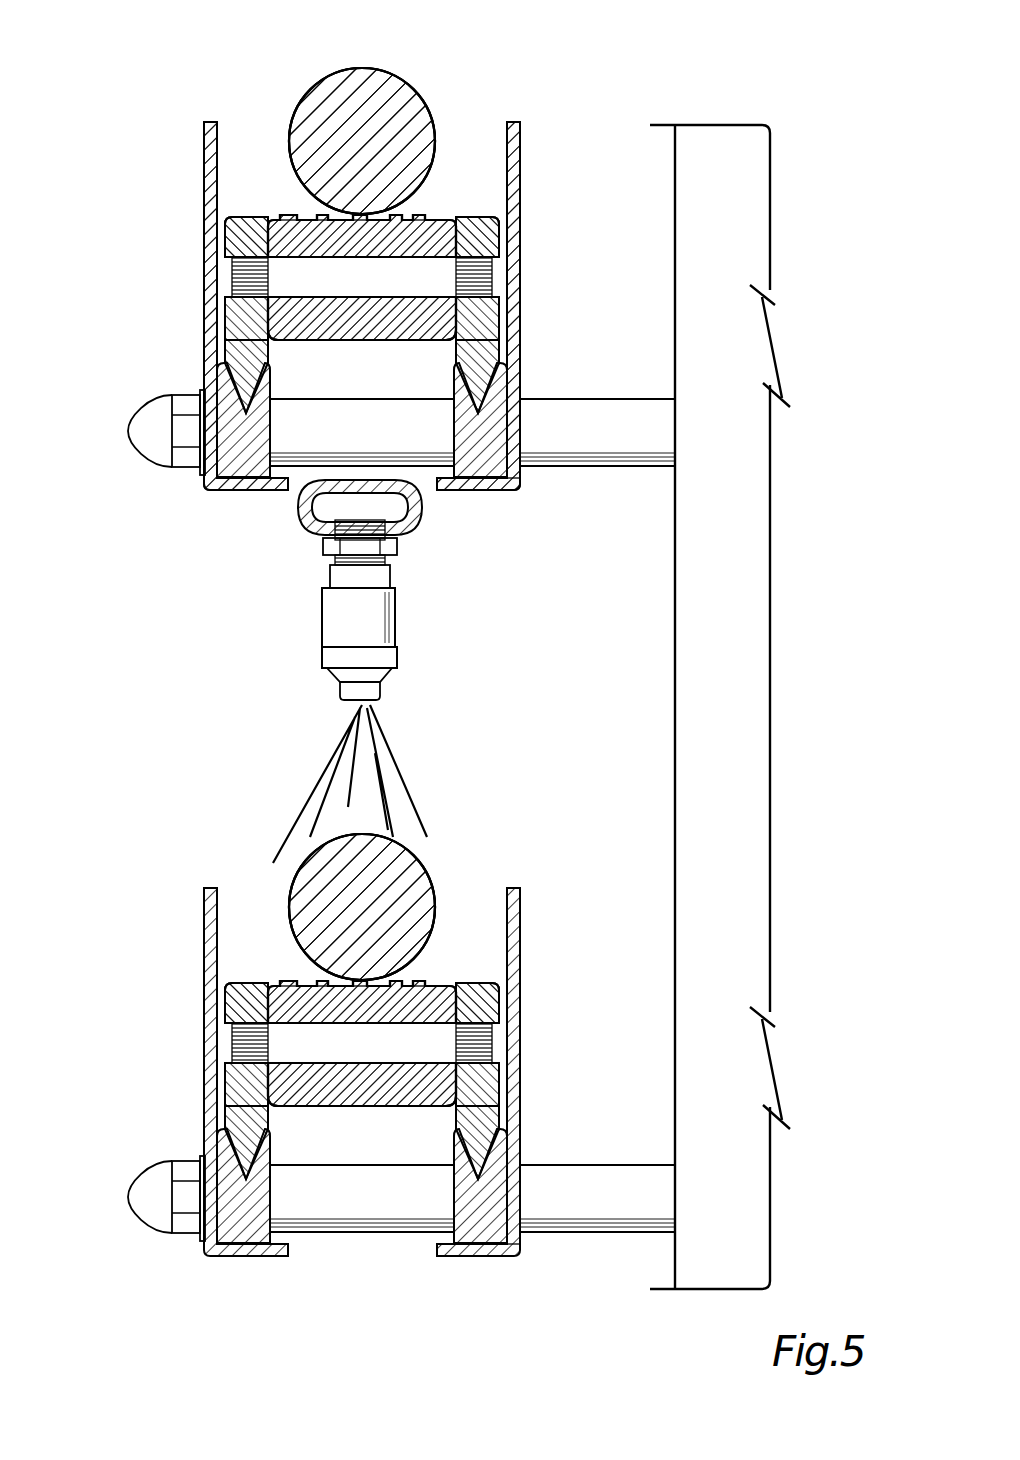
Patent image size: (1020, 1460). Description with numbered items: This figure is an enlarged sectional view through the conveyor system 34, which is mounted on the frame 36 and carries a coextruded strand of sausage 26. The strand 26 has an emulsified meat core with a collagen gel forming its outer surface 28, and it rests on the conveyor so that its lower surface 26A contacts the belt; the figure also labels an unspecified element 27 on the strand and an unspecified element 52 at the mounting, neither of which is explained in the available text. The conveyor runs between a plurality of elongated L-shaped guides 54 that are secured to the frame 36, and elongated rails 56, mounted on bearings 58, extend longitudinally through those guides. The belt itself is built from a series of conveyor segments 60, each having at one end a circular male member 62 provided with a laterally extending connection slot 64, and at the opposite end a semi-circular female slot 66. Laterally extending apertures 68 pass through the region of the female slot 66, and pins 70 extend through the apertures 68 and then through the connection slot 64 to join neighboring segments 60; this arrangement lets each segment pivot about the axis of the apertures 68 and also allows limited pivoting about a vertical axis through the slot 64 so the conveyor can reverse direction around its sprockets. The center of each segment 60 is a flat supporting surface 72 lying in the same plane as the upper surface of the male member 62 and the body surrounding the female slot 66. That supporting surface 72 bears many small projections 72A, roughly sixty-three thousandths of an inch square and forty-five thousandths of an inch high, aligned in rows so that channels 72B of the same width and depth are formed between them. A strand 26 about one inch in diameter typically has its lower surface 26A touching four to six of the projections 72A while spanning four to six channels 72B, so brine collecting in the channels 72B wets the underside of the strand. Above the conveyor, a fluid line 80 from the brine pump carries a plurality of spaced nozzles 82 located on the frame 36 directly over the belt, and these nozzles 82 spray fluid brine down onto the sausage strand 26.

The strand of sausage 26 is at (374, 46).
The roller outer surface 27 is at (292, 157).
The outer surface 28 is at (408, 106).
The lower surface 26A is at (280, 220).
The conveyor system 34 is at (182, 168).
The frame 36 is at (690, 137).
The bolt 52 is at (601, 464).
The L-shaped guides 54 is at (250, 491).
The rails 56 is at (245, 350).
The bearings 58 is at (225, 385).
The conveyor segment 60 is at (240, 238).
The circular male member 62 is at (518, 288).
The connection slot 64 is at (440, 262).
The semi-circular female slot 66 is at (435, 203).
The apertures 68 is at (250, 318).
The pins 70 is at (250, 266).
The flat supporting surface 72 is at (270, 203).
The projections 72A is at (298, 218).
The channels 72B is at (290, 216).
The fluid line 80 is at (318, 529).
The nozzles 82 is at (343, 598).